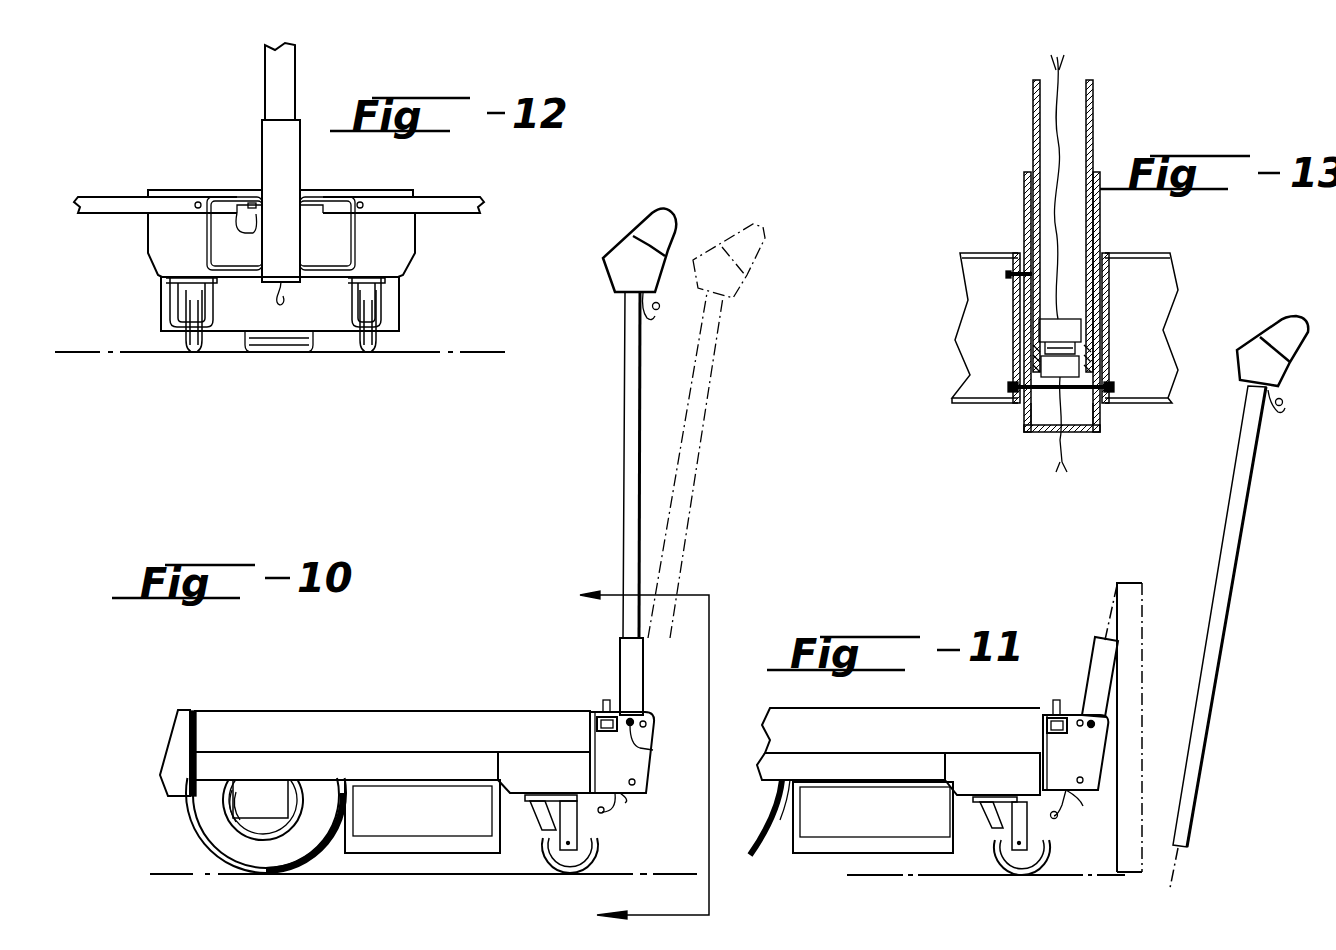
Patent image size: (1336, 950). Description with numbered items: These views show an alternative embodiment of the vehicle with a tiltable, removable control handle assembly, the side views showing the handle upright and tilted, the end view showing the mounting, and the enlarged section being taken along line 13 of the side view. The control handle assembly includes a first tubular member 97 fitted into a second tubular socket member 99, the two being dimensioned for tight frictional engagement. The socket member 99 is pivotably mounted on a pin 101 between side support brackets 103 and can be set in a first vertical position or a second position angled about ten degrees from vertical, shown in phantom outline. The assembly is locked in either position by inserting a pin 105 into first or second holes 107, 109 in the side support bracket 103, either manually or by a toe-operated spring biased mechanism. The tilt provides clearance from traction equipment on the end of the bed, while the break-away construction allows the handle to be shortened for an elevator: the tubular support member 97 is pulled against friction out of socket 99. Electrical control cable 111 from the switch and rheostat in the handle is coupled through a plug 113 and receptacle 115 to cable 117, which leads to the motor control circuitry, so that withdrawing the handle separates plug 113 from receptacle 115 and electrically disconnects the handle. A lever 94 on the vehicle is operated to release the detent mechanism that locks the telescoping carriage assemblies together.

In FIG. 10, the section line 13 is at (644, 756).
In FIG. 10, the lever 94 is at (603, 700).
In FIG. 12, the first tubular member 97 is at (273, 83).
In FIG. 13, the first tubular member 97 is at (1033, 127).
In FIG. 10, the first tubular member 97 is at (627, 502).
In FIG. 11, the first tubular member 97 is at (1210, 683).
In FIG. 12, the second tubular socket member 99 is at (291, 170).
In FIG. 13, the second tubular socket member 99 is at (1024, 205).
In FIG. 10, the second tubular socket member 99 is at (620, 653).
In FIG. 11, the second tubular socket member 99 is at (1096, 661).
In FIG. 12, the pin 101 is at (255, 258).
In FIG. 13, the pin 101 is at (1038, 393).
In FIG. 10, the pin 101 is at (634, 784).
In FIG. 12, the side support brackets 103 is at (281, 282).
In FIG. 13, the side support brackets 103 is at (1012, 296).
In FIG. 10, the side support brackets 103 is at (637, 762).
In FIG. 12, the pin 105 is at (228, 212).
In FIG. 13, the pin 105 is at (1010, 273).
In FIG. 10, the pin 105 is at (630, 720).
In FIG. 10, the first hole 107 is at (641, 744).
In FIG. 10, the second hole 109 is at (646, 724).
In FIG. 13, the electrical control cable 111 is at (1065, 118).
In FIG. 13, the plug 113 is at (1060, 336).
In FIG. 13, the receptacle 115 is at (1082, 380).
In FIG. 13, the cable 117 is at (1065, 447).
In FIG. 11, the cable 117 is at (1063, 817).